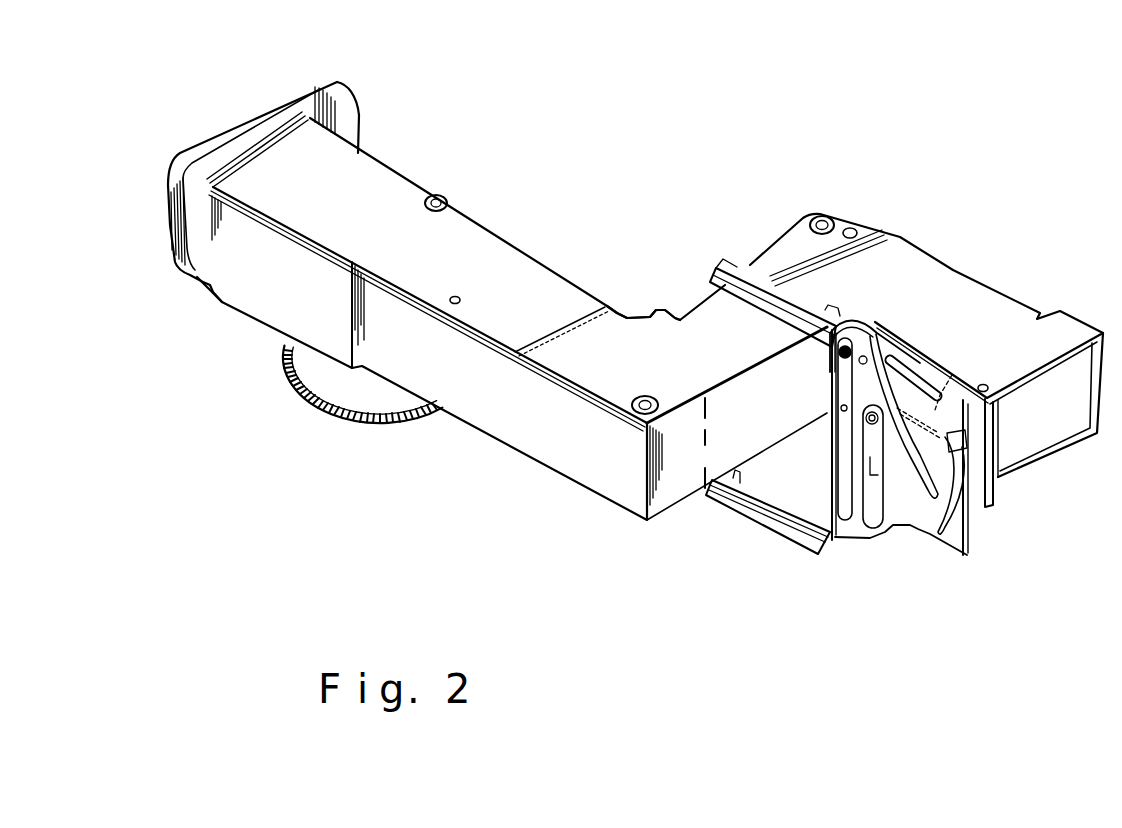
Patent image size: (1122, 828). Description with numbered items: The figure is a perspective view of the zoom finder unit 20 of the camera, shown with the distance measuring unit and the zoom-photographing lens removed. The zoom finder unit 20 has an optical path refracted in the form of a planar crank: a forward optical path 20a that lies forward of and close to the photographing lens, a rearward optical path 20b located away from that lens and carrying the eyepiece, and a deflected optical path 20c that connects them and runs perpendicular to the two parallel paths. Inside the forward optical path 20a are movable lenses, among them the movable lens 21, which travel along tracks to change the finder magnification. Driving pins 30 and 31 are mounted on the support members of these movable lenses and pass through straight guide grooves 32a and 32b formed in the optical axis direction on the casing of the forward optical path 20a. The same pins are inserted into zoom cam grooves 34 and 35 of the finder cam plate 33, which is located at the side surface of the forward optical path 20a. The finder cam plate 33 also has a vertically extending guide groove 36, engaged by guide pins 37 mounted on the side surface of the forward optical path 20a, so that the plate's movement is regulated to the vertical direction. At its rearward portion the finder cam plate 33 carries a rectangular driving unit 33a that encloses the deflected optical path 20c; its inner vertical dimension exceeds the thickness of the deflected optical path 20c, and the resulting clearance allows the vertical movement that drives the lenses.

The zoom finder unit 20 is at (779, 172).
The forward optical path 20a is at (947, 297).
The rearward optical path 20b is at (502, 255).
The deflected optical path 20c is at (707, 330).
The movable lens 21 is at (1067, 423).
The driving pin 30 is at (996, 424).
The driving pin 31 is at (867, 356).
The guide groove 32a is at (956, 391).
The guide groove 32b is at (913, 378).
The finder cam plate 33 is at (921, 520).
The rectangular driving unit 33a is at (757, 287).
The zoom cam groove 34 is at (951, 505).
The zoom cam groove 35 is at (912, 448).
The guide groove 36 is at (834, 525).
The guide pin 37 is at (830, 376).